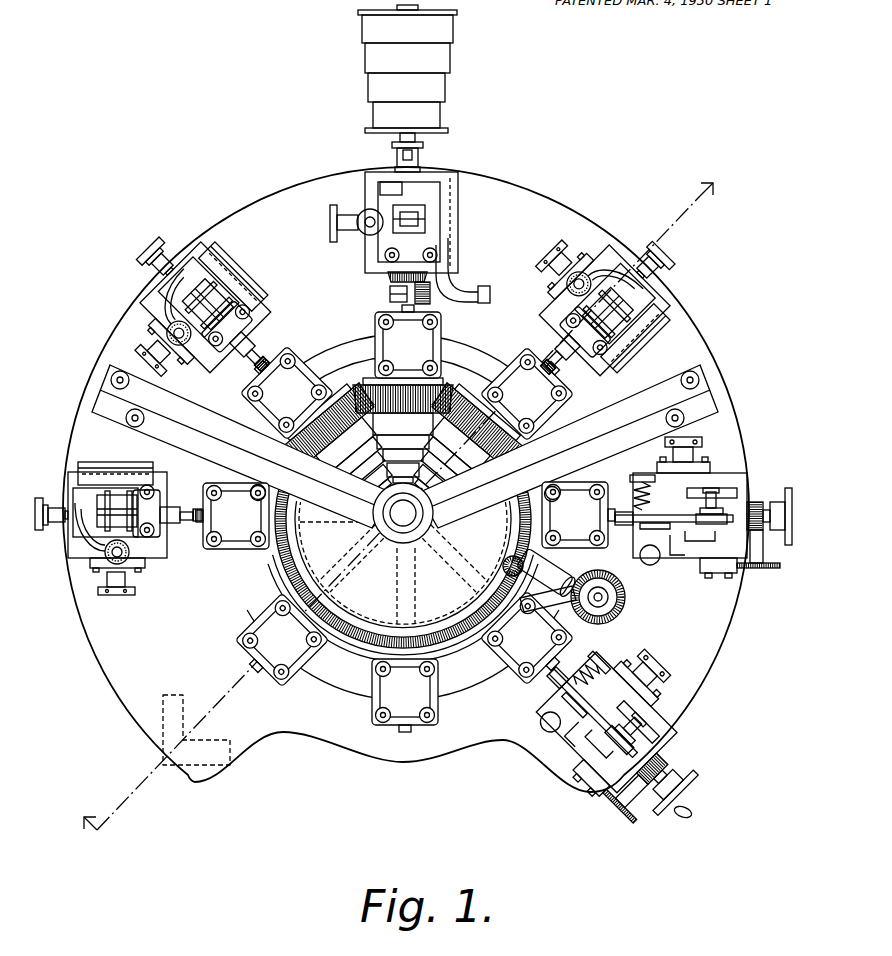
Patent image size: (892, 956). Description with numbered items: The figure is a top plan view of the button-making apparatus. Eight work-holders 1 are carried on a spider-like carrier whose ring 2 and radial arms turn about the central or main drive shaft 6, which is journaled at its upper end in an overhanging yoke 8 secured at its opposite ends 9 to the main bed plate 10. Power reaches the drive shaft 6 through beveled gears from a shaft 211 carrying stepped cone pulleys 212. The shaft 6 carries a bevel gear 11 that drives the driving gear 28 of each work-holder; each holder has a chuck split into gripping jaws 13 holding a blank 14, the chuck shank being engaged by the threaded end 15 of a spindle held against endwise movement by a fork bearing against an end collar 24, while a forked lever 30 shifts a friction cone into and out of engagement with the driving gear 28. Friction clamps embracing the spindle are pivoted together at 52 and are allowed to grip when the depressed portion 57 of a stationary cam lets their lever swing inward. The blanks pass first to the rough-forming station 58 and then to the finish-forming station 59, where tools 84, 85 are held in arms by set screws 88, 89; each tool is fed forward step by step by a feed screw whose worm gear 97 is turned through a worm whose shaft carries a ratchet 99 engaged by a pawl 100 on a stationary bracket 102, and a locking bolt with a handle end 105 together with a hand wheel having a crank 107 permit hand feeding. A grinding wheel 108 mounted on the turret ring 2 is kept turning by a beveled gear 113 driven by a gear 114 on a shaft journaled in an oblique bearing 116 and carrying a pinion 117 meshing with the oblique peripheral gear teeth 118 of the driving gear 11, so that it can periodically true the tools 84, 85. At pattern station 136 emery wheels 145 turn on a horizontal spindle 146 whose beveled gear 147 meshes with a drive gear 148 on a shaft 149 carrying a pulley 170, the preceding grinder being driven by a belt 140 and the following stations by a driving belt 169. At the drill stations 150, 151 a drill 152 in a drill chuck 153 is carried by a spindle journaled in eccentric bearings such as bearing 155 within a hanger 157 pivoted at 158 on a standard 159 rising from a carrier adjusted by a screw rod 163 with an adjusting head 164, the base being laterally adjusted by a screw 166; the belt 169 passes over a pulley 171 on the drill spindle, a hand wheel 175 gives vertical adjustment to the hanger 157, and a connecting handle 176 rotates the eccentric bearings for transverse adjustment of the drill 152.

The work-holder 1 is at (296, 680).
The ring 2 is at (450, 690).
The main drive shaft 6 is at (403, 513).
The overhanging yoke 8 is at (218, 415).
The opposite ends 9 is at (105, 385).
The main bed plate 10 is at (90, 655).
The bevel gear 11 is at (403, 564).
The gripping jaws 13 is at (398, 310).
The blank 14 is at (380, 308).
The threaded end 15 is at (556, 365).
The end collar 24 is at (392, 476).
The driving gear 28 is at (338, 372).
The forked lever 30 is at (380, 398).
The pivot 52 is at (444, 463).
The depressed portion 57 is at (361, 463).
The station 58 is at (605, 690).
The station 59 is at (690, 560).
The tool 84 is at (556, 760).
The tool 85 is at (672, 524).
The set screw 88 is at (712, 490).
The set screw 89 is at (645, 478).
The worm gear 97 is at (756, 532).
The ratchet 99 is at (760, 566).
The pawl 100 is at (735, 576).
The stationary bracket 102 is at (715, 575).
The handle end 105 is at (790, 488).
The handle 107 is at (692, 812).
The grinding wheel 108 is at (604, 611).
The beveled gear 113 is at (590, 612).
The gear 114 is at (532, 604).
The oblique bearing 116 is at (566, 578).
The pinion 117 is at (512, 577).
The oblique peripheral gear teeth 118 is at (345, 620).
The station 136 is at (450, 256).
The belt 140 is at (562, 330).
The emery wheels 145 is at (390, 294).
The horizontal spindle 146 is at (474, 292).
The beveled gear 147 is at (431, 298).
The drive gear 148 is at (388, 277).
The shaft 149 is at (426, 214).
The station 150 is at (250, 305).
The station 151 is at (160, 480).
The drill 152 is at (185, 505).
The drill chuck 153 is at (170, 526).
The eccentric bearing 155 is at (247, 332).
The hanger 157 is at (380, 196).
The pivot 158 is at (70, 478).
The standard 159 is at (122, 463).
The screw rod 163 is at (46, 528).
The adjusting head 164 is at (38, 498).
The screw 166 is at (117, 596).
The driving belt 169 is at (428, 222).
The pulley 170 is at (352, 240).
The pulley 171 is at (165, 310).
The hand wheel 175 is at (130, 557).
The connecting handle 176 is at (232, 285).
The shaft 211 is at (396, 153).
The stepped cone pulleys 212 is at (445, 24).